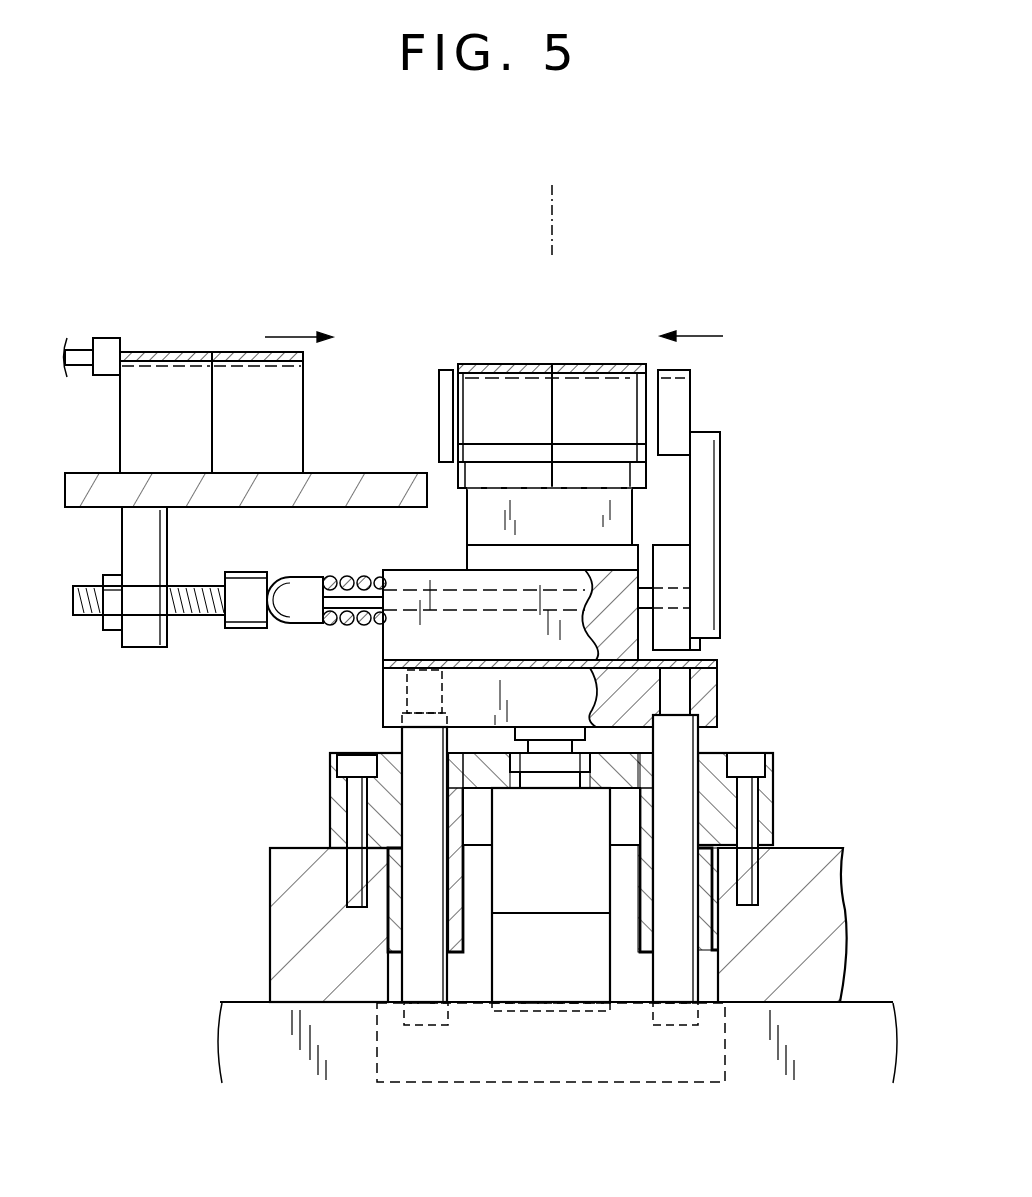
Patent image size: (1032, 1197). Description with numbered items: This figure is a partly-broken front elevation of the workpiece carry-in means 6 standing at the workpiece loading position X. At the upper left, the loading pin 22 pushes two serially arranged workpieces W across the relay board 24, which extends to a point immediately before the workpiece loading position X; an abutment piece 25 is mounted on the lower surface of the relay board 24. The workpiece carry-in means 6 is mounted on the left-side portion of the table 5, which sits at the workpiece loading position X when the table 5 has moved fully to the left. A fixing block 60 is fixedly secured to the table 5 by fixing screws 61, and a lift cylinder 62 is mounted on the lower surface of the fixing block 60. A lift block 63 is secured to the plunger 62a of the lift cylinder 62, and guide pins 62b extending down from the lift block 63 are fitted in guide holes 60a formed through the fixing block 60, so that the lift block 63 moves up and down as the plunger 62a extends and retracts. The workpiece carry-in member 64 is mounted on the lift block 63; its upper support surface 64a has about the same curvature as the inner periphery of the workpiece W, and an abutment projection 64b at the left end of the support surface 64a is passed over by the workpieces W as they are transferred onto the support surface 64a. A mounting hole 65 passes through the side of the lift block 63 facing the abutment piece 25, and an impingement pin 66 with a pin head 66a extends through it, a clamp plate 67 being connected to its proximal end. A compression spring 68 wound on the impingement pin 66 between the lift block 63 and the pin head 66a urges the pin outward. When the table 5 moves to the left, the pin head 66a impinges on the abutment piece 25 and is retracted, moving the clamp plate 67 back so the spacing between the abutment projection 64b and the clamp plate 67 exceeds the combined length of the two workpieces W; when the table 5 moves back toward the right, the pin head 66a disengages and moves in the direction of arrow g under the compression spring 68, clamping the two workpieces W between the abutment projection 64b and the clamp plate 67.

The table 5 is at (297, 935).
The workpiece carry-in means 6 is at (773, 458).
The loading pin 22 is at (77, 357).
The relay board 24 is at (378, 490).
The abutment piece 25 is at (243, 630).
The fixing block 60 is at (588, 852).
The guide hole 60a is at (400, 852).
The fixing screw 61 is at (358, 797).
The lift cylinder 62 is at (557, 980).
The plunger 62a is at (557, 750).
The guide pin 62b is at (425, 980).
The lift block 63 is at (383, 726).
The workpiece carry-in member 64 is at (552, 423).
The support surface 64a is at (508, 366).
The abutment projection 64b is at (445, 370).
The mounting hole 65 is at (613, 603).
The impingement pin 66 is at (364, 615).
The pin head 66a is at (297, 623).
The clamp plate 67 is at (683, 398).
The compression spring 68 is at (346, 578).
The workpiece W is at (232, 352).
The workpiece loading position X is at (555, 190).
The direction of arrow g is at (690, 336).